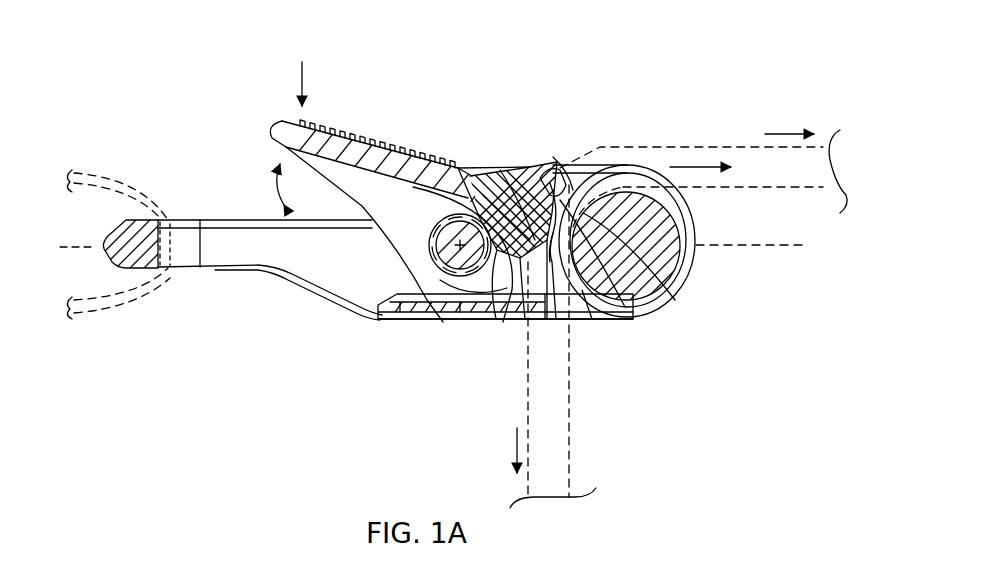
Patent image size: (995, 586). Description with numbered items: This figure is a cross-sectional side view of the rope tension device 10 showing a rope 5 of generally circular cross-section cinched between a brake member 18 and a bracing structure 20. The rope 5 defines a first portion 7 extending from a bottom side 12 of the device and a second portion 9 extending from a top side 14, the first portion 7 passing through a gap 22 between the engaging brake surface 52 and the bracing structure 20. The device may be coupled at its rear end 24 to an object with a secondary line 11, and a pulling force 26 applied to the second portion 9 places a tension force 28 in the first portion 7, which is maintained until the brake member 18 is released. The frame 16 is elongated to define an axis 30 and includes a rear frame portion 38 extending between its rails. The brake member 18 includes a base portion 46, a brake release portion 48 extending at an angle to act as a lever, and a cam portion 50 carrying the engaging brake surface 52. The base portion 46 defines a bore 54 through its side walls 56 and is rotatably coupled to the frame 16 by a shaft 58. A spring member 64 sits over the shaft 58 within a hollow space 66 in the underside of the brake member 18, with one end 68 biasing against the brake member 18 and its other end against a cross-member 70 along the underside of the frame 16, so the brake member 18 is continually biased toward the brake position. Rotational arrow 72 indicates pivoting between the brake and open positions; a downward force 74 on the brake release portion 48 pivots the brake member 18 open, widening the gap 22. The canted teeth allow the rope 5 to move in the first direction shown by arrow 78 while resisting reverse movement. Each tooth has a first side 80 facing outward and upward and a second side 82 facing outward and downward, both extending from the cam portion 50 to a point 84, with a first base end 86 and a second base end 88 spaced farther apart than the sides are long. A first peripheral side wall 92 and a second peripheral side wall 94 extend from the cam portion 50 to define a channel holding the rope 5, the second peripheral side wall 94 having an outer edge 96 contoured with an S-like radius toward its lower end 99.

The rope 5 is at (745, 191).
The first portion 7 is at (570, 430).
The second portion 9 is at (732, 147).
The rope tension device 10 is at (130, 128).
The secondary line 11 is at (137, 188).
The bottom side 12 is at (378, 373).
The top side 14 is at (463, 80).
The frame 16 is at (330, 300).
The brake member 18 is at (516, 168).
The bracing structure 20 is at (702, 262).
The gap 22 is at (579, 192).
The rear end 24 is at (110, 226).
The pulling force 26 is at (788, 134).
The tension force 28 is at (515, 448).
The axis 30 is at (783, 248).
The rear frame portion 38 is at (216, 214).
The base portion 46 is at (395, 262).
The brake release portion 48 is at (345, 136).
The cam portion 50 is at (500, 170).
The engaging brake surface 52 is at (545, 302).
The bore 54 is at (418, 303).
The side walls 56 is at (385, 246).
The shaft 58 is at (442, 238).
The spring member 64 is at (458, 303).
The hollow space 66 is at (490, 302).
The one end 68 is at (420, 190).
The cross-member 70 is at (385, 316).
The rotational arrow 72 is at (278, 168).
The force 74 is at (300, 85).
The arrow 78 is at (708, 167).
The first side 80 is at (536, 178).
The second side 82 is at (495, 190).
The point 84 is at (668, 297).
The first base end 86 is at (552, 170).
The second base end 88 is at (472, 168).
The first peripheral side wall 92 is at (565, 165).
The second peripheral side wall 94 is at (592, 304).
The outer edge 96 is at (626, 305).
The lower end 99 is at (505, 302).